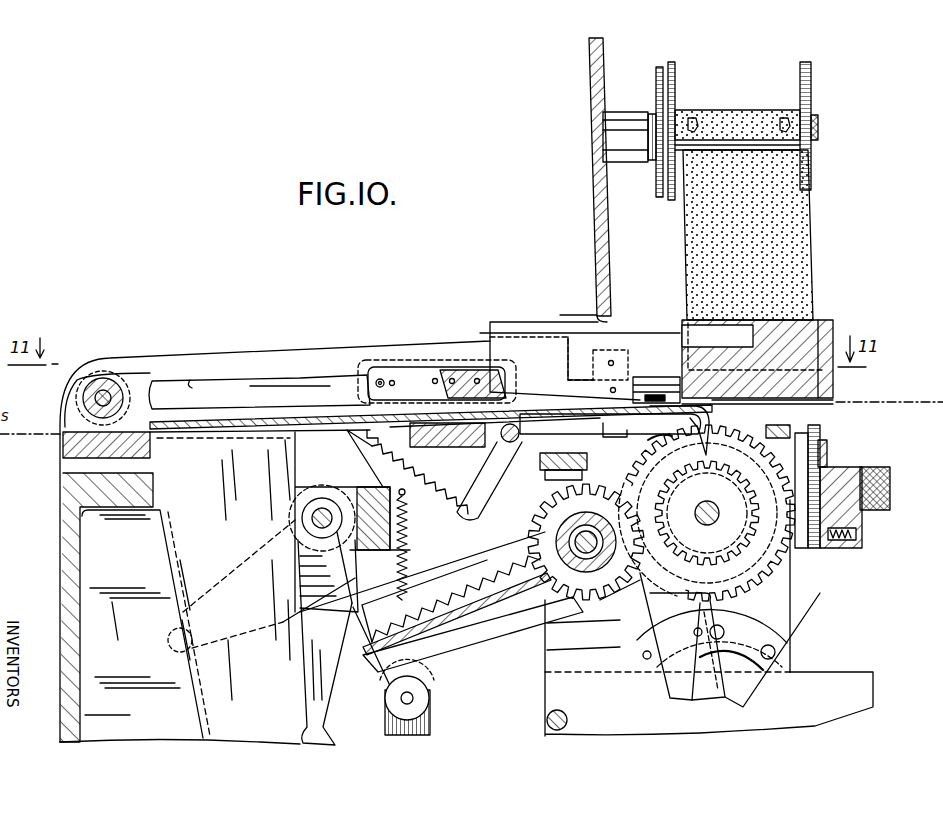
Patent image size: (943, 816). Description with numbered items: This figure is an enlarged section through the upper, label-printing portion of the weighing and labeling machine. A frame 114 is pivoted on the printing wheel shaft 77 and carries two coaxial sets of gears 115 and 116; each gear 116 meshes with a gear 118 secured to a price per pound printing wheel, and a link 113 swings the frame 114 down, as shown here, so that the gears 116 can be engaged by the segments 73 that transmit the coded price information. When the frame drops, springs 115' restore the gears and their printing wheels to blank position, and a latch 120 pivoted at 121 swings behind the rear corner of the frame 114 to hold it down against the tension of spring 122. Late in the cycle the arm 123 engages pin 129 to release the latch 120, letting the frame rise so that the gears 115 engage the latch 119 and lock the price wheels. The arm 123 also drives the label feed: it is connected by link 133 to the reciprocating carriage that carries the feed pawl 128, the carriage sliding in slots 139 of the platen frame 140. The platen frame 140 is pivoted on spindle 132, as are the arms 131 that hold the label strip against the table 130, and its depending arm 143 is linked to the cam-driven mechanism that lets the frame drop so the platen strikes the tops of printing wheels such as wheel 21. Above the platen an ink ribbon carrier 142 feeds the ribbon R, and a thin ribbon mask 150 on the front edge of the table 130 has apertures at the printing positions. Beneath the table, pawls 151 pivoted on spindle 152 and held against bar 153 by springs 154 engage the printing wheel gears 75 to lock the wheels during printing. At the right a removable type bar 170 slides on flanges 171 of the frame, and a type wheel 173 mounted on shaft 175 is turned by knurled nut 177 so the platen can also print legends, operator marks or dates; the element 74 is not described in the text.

The printing wheel 21 is at (795, 555).
The segment 73 is at (808, 600).
The indicator plate 74 is at (616, 628).
The printing wheel gear 75 is at (748, 507).
The printing wheel shaft 77 is at (706, 511).
The link 113 is at (430, 712).
The frame 114 is at (450, 640).
The gear set 115 is at (571, 538).
The spring 115' is at (451, 599).
The gear set 116 is at (546, 465).
The gear 118 is at (707, 437).
The latch 119 is at (610, 438).
The latch 120 is at (332, 582).
The pivot 121 is at (323, 510).
The spring 122 is at (408, 551).
The arm 123 is at (322, 690).
The feed pawl 128 is at (540, 396).
The pin 129 is at (168, 644).
The table 130 is at (258, 408).
The arm 131 is at (228, 410).
The spindle 132 is at (110, 384).
The link 133 is at (400, 372).
The slot 139 is at (188, 382).
The platen frame 140 is at (313, 365).
The ink ribbon carrier 142 is at (812, 178).
The depending arm 143 is at (172, 530).
The ribbon mask 150 is at (703, 420).
The pawl 151 is at (668, 400).
The spindle 152 is at (548, 458).
The bar 153 is at (660, 437).
The spring 154 is at (402, 484).
The removable type bar 170 is at (792, 430).
The flange 171 is at (822, 447).
The type wheel 173 is at (828, 460).
The shaft 175 is at (866, 520).
The knurled nut 177 is at (890, 500).
The ribbon R is at (796, 237).